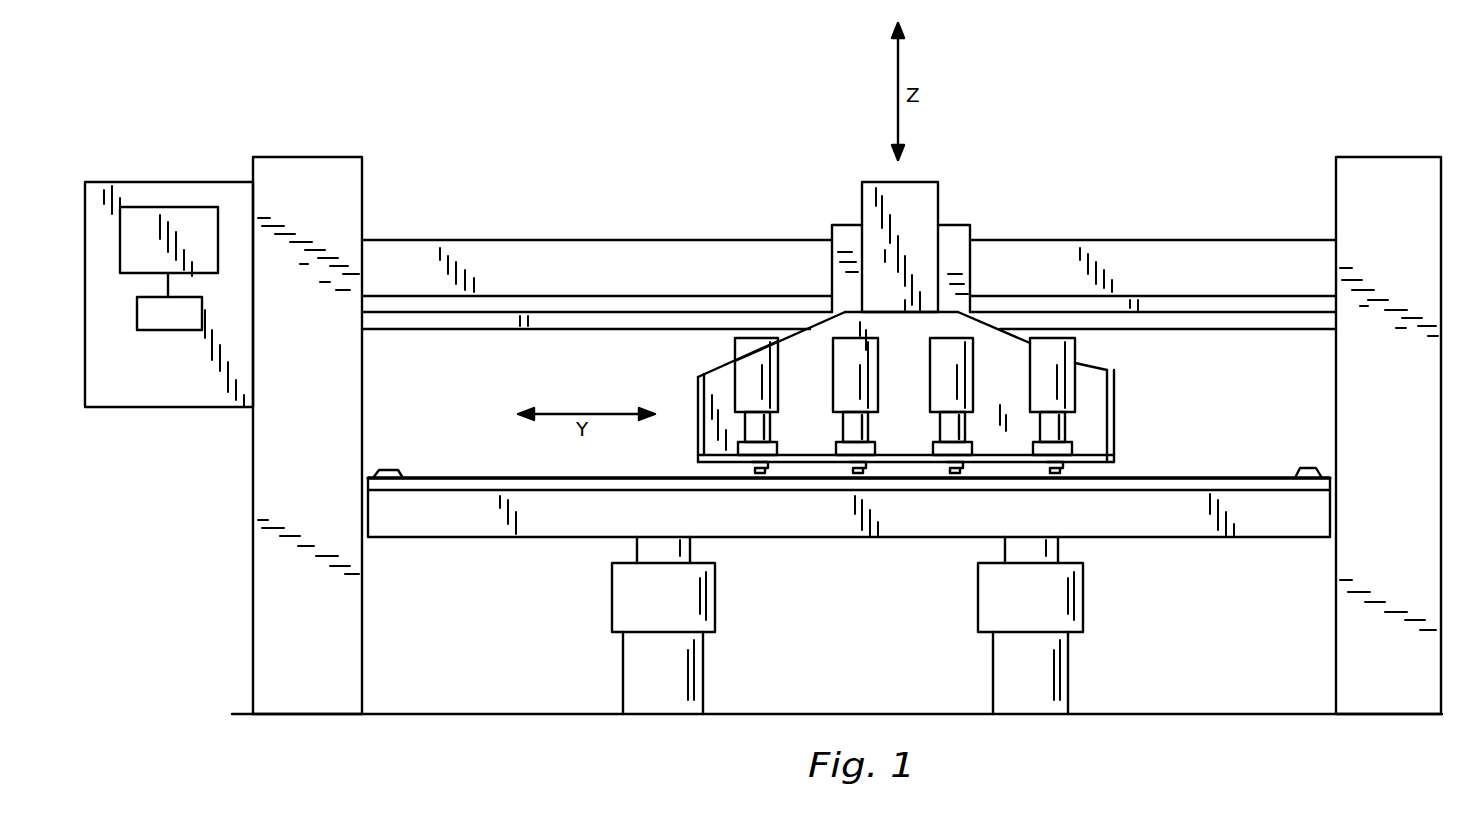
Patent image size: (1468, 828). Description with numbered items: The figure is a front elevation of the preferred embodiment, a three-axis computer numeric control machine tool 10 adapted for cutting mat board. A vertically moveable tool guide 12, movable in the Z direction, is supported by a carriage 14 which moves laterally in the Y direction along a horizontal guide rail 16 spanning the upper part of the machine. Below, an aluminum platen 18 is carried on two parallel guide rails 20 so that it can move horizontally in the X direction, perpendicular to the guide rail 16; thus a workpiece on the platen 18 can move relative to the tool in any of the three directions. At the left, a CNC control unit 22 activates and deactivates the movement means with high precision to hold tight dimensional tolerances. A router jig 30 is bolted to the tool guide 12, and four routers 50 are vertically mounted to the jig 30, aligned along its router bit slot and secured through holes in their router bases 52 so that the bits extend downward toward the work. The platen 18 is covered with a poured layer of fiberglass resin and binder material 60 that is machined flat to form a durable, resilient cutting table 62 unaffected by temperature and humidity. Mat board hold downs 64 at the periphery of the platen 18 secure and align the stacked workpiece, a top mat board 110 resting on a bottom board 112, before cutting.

The three-axis CNC machine tool 10 is at (1123, 177).
The tool guide 12 is at (920, 212).
The carriage 14 is at (957, 253).
The guide rail 16 is at (1180, 258).
The aluminum platen 18 is at (1275, 522).
The guide rails 20 is at (713, 590).
The CNC control unit 22 is at (165, 193).
The router jig 30 is at (1115, 368).
The routers 50 is at (768, 382).
The router bases 52 is at (778, 443).
The fiberglass resin and binder material 60 is at (527, 493).
The cutting table 62 is at (1180, 473).
The mat board hold downs 64 is at (390, 468).
The top mat board 110 is at (443, 483).
The bottom board 112 is at (849, 540).